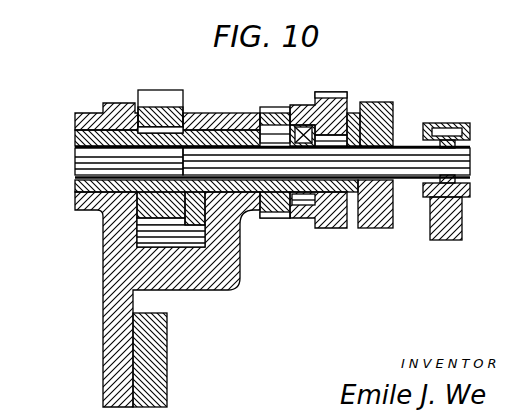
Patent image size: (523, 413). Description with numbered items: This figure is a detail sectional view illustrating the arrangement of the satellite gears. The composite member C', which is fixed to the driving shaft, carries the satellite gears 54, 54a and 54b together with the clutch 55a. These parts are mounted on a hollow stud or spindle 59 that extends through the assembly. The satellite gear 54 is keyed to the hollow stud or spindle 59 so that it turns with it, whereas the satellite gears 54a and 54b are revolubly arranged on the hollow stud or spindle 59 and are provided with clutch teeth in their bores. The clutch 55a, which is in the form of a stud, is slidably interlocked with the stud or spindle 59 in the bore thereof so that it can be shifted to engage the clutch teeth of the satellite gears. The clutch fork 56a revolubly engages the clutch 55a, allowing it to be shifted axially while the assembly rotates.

The hollow stud or spindle 59 is at (95, 158).
The satellite gear 54 is at (172, 85).
The satellite gear 54a is at (287, 87).
The satellite gear 54b is at (347, 85).
The clutch 55a is at (358, 162).
The clutch fork 56a is at (447, 212).
The composite member C' is at (162, 360).